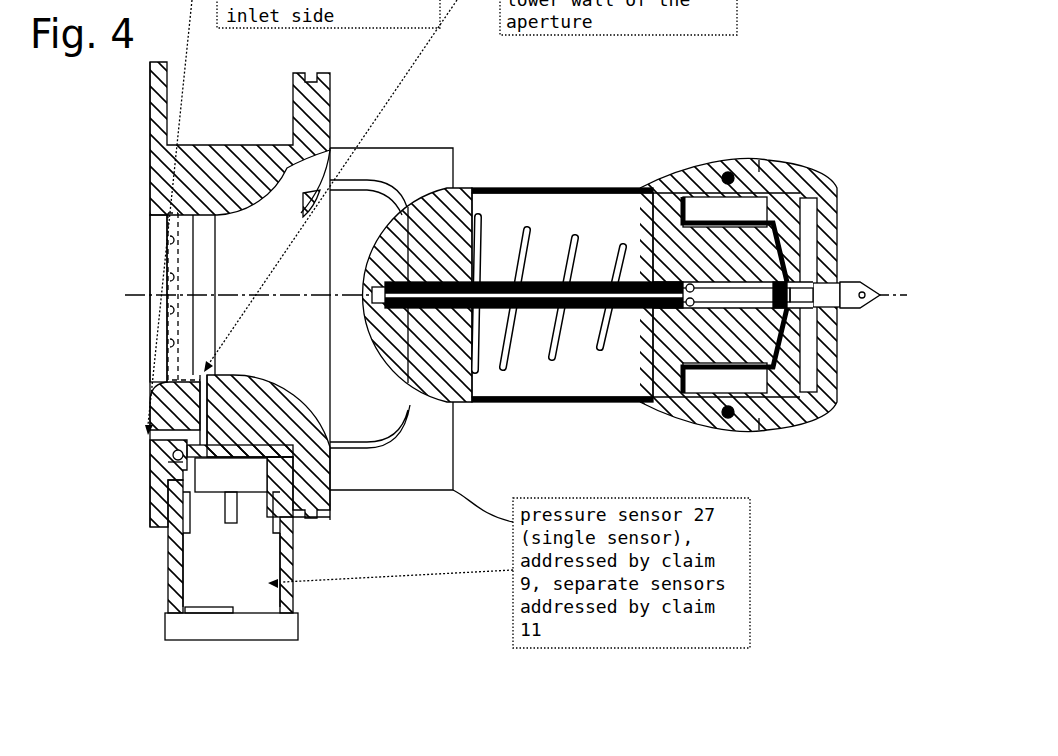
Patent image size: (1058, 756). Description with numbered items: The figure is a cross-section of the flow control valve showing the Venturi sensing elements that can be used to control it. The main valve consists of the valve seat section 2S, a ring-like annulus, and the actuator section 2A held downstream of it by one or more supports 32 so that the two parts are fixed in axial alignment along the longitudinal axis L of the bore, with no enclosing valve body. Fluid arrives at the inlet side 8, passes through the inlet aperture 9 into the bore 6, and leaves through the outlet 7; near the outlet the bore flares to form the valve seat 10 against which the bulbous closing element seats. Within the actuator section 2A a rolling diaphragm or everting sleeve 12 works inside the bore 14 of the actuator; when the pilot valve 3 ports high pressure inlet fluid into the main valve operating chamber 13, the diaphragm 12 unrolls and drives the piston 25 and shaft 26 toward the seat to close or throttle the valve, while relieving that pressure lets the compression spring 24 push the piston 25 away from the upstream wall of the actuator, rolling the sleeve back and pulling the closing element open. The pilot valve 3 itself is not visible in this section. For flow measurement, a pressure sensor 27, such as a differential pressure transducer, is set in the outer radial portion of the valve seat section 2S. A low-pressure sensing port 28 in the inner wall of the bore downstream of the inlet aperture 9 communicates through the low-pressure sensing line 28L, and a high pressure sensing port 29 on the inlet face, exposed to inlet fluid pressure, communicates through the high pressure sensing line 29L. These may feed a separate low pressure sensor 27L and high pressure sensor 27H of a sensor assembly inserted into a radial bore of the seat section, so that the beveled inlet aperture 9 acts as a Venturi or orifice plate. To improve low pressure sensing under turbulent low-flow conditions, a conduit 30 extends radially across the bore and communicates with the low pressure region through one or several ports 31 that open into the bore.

The pilot valve 3 is at (345, 82).
The inlet side of the valve 8 is at (137, 159).
The inlet aperture 9 is at (147, 274).
The conduit 30 is at (162, 327).
The ports 31 is at (168, 236).
The low-pressure sensing port 28 is at (212, 365).
The low-pressure sensing line 28L is at (180, 403).
The high pressure sensing port 29 is at (138, 435).
The high pressure sensing line 29L is at (172, 453).
The pressure sensor 27 is at (143, 585).
The low pressure sensor 27L is at (231, 490).
The high pressure sensor 27H is at (231, 570).
The supports 32 is at (453, 148).
The valve seat 10 is at (308, 396).
The bore 6 is at (323, 385).
The outlet 7 is at (380, 381).
The actuator section 2A is at (613, 416).
The bore of actuator 14 is at (608, 234).
The main valve operating chamber 13 is at (810, 222).
The rolling diaphragm 12 is at (717, 375).
The piston 25 is at (646, 232).
The shaft 26 is at (592, 312).
The spring 24 is at (529, 228).
The valve seat section 2S is at (358, 518).
The longitudinal axis L is at (530, 299).